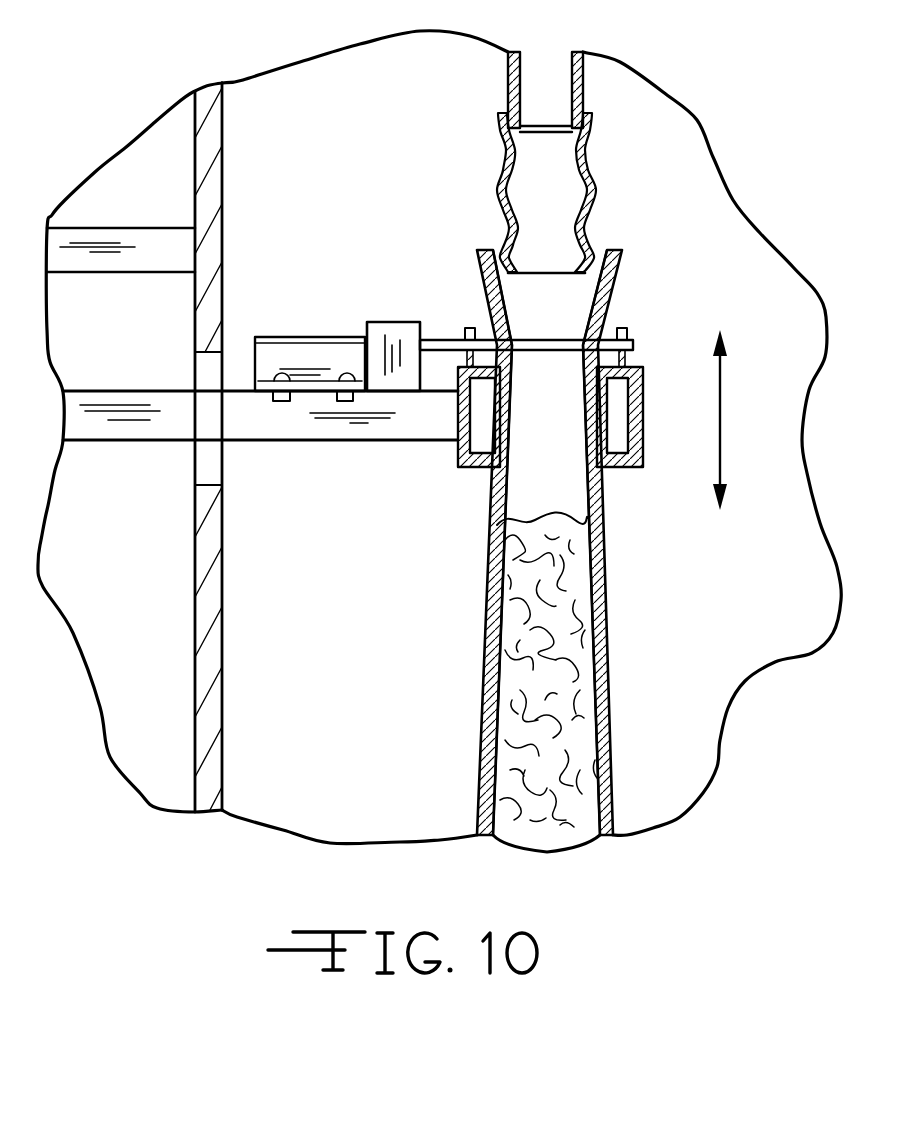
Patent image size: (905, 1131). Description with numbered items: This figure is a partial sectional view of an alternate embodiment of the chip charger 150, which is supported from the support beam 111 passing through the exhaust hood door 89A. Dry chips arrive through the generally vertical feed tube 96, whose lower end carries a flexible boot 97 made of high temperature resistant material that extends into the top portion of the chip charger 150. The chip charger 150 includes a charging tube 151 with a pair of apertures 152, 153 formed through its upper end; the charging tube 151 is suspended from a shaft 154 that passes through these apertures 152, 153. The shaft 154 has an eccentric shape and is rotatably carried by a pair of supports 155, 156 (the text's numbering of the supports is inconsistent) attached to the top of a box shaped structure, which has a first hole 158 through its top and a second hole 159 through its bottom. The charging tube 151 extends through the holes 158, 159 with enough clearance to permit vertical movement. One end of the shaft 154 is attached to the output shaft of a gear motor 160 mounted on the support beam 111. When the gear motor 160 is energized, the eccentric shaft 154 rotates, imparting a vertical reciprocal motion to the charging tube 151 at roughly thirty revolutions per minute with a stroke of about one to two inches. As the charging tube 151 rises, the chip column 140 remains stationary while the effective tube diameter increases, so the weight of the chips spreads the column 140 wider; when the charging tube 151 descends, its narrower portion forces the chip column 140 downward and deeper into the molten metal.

The exhaust hood door 89A is at (222, 180).
The feed tube 96 is at (507, 90).
The flexible boot 97 is at (596, 178).
The support beam 111 is at (278, 422).
The chip column 140 is at (557, 742).
The chip charger 150 is at (632, 641).
The charging tube 151 is at (600, 510).
The aperture 152 is at (575, 340).
The aperture 153 is at (517, 350).
The shaft 154 is at (440, 338).
The bolt 155 is at (468, 328).
The support 156 is at (622, 327).
The first hole 158 is at (605, 390).
The second hole 159 is at (608, 478).
The gear motor 160 is at (292, 350).